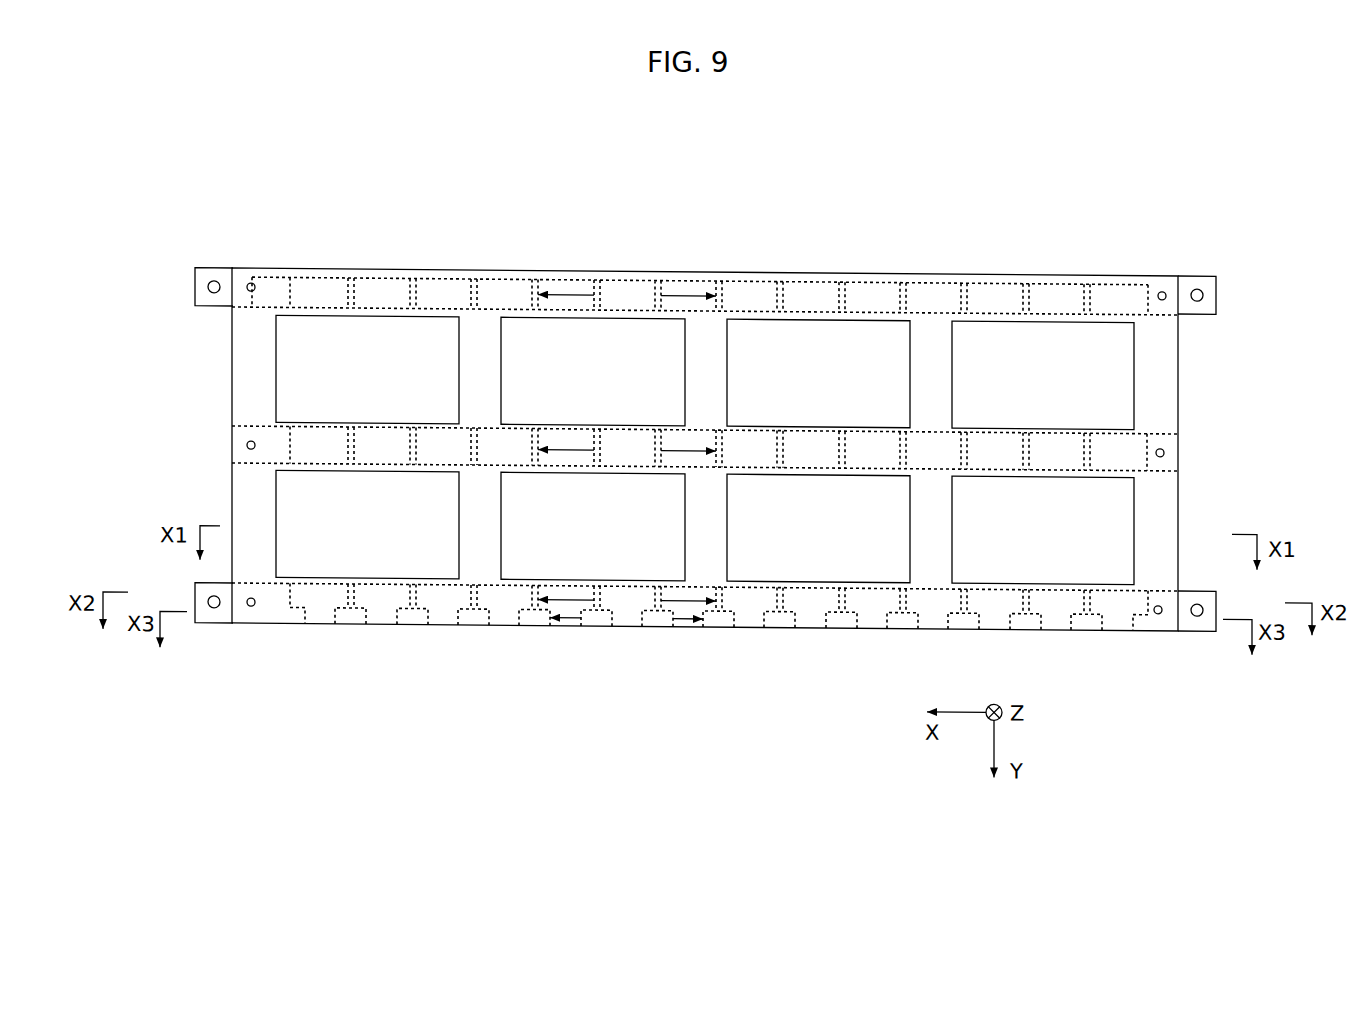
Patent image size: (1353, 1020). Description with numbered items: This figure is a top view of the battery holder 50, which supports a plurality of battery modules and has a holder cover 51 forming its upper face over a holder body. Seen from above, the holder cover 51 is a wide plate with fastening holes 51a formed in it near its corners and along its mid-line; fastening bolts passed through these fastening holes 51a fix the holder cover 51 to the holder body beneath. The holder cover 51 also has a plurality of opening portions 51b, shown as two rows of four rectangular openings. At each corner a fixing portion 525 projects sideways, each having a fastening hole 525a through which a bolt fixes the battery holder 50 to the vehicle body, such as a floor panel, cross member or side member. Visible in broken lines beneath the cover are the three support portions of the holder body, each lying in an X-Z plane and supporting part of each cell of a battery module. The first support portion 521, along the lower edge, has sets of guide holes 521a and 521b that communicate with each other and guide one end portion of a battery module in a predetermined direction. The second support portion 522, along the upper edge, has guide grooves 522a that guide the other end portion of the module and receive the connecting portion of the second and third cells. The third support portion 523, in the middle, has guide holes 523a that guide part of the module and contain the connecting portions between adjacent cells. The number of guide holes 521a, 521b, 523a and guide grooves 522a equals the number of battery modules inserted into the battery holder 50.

The battery holder 50 is at (866, 266).
The holder cover 51 is at (250, 373).
The fastening holes 51a is at (251, 283).
The opening portions 51b is at (277, 394).
The first support portion 521 is at (258, 585).
The guide hole 521a is at (678, 582).
The guide hole 521b is at (563, 620).
The second support portion 522 is at (261, 311).
The guide grooves 522a is at (570, 287).
The third support portion 523 is at (257, 468).
The guide holes 523a is at (665, 458).
The fixing portions 525 is at (197, 289).
The fastening holes 525a is at (214, 281).